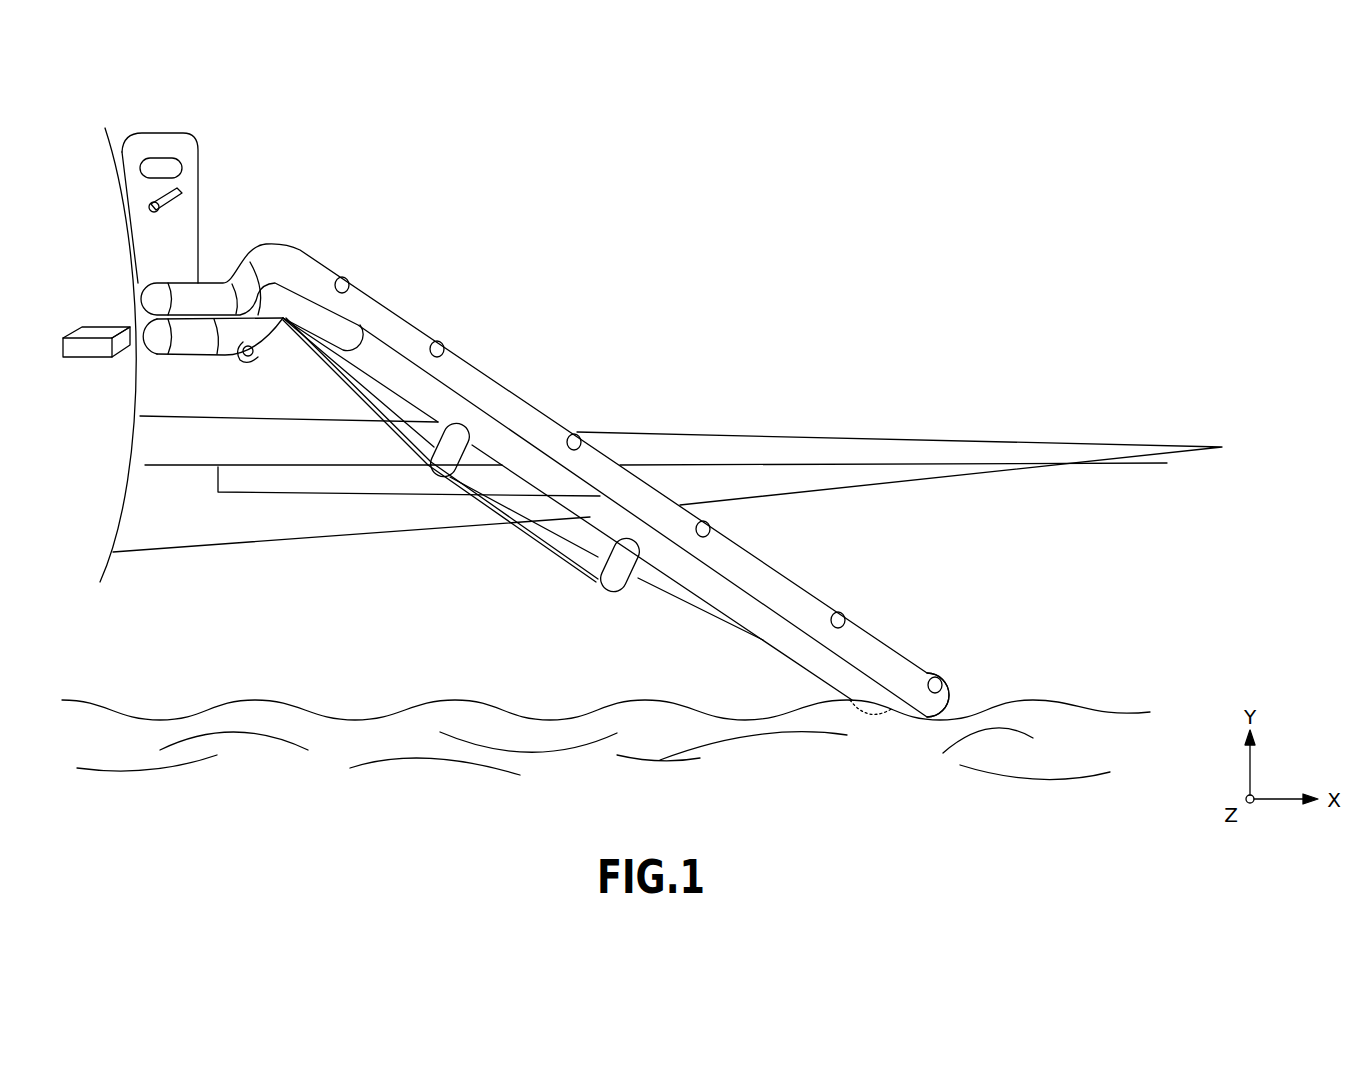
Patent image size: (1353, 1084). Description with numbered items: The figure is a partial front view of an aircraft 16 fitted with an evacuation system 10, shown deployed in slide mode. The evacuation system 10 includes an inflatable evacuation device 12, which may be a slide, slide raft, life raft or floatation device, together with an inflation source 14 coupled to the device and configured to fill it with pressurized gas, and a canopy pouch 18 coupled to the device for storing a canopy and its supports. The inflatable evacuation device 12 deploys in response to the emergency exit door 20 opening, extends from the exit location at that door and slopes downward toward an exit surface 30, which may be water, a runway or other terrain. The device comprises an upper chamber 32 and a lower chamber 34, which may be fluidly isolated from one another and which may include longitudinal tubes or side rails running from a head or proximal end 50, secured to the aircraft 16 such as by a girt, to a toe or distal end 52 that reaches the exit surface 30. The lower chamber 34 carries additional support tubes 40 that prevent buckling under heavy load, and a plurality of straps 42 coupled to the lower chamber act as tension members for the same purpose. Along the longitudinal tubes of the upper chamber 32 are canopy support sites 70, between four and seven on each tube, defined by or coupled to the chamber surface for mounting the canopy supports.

The evacuation system 10 is at (766, 200).
The inflatable evacuation device 12 is at (470, 312).
The inflation source 14 is at (250, 358).
The aircraft 16 is at (104, 572).
The canopy pouch 18 is at (100, 358).
The emergency exit door 20 is at (190, 213).
The exit surface 30 is at (437, 700).
The upper chamber 32 is at (538, 428).
The lower chamber 34 is at (742, 600).
The support tubes 40 is at (112, 280).
The straps 42 is at (522, 535).
The proximal end 50 is at (267, 223).
The distal end 52 is at (988, 686).
The canopy support sites 70 is at (345, 275).